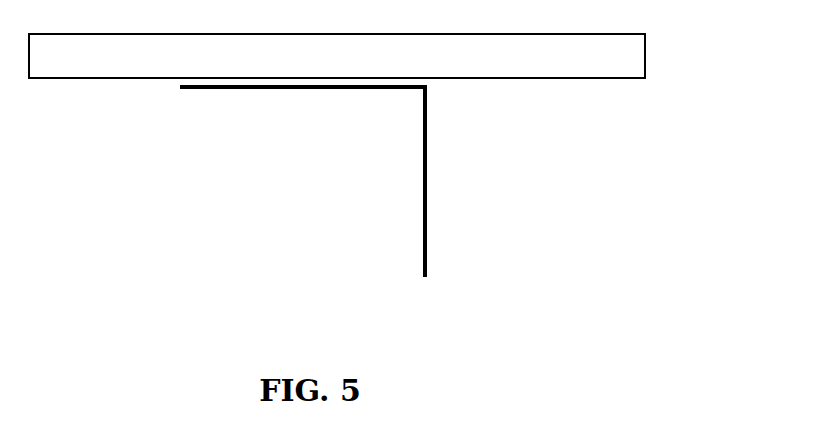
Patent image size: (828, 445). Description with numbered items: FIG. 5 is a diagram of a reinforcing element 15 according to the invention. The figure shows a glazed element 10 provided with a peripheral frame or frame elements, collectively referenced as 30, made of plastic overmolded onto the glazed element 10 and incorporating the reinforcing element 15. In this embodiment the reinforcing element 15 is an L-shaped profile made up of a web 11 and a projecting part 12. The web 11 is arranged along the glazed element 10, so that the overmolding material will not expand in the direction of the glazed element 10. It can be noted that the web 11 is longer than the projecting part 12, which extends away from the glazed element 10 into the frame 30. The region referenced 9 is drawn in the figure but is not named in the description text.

The glazed element 10 is at (326, 66).
The encapsulant 9 is at (188, 182).
The web 11 is at (303, 131).
The projecting part 12 is at (425, 205).
The reinforcing element 15 is at (442, 165).
The peripheral frame 30 is at (668, 161).